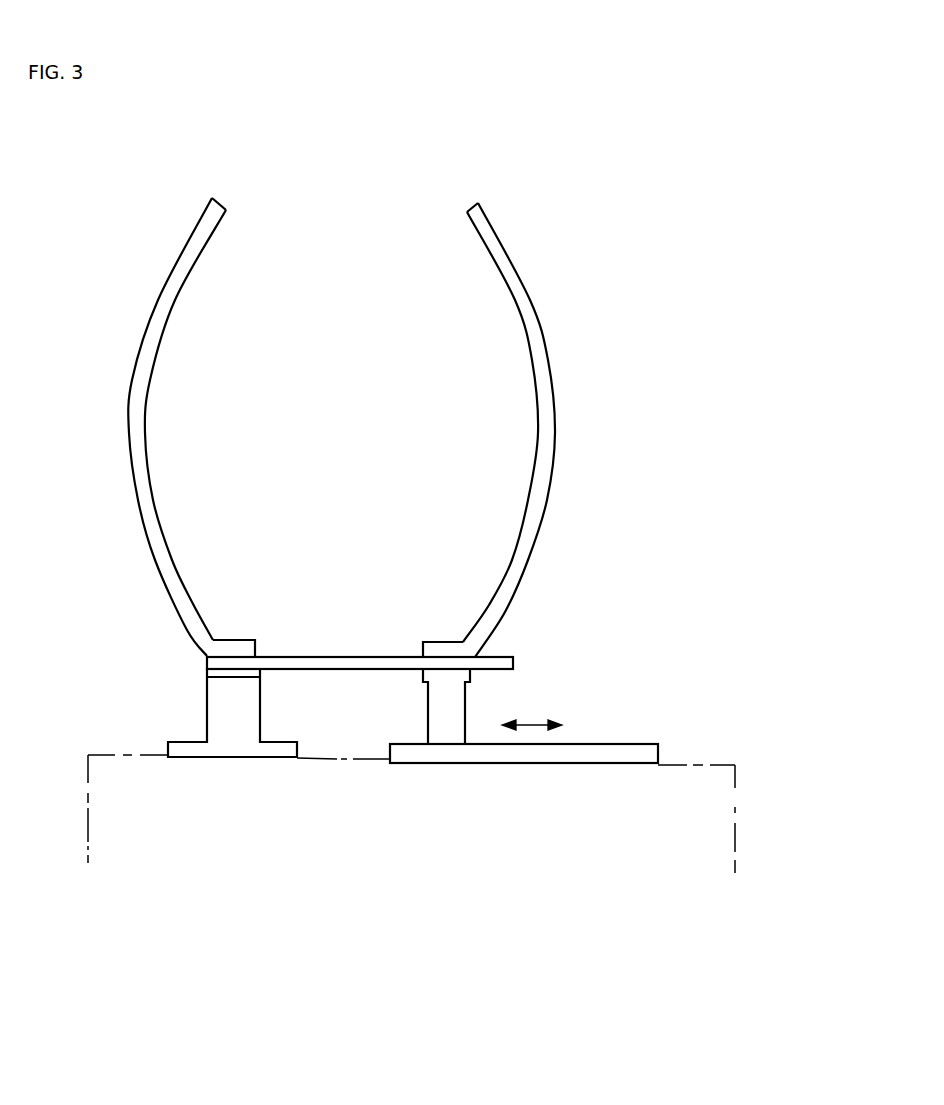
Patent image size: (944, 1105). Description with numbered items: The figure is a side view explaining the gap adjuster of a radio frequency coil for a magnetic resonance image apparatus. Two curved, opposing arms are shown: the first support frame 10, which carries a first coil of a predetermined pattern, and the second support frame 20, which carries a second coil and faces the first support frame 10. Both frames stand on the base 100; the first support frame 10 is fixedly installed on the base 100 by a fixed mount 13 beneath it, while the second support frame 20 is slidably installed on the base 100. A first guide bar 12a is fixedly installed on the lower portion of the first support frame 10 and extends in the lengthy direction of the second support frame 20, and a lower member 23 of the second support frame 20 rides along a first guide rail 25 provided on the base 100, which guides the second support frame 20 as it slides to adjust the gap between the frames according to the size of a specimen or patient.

The first support frame 10 is at (205, 222).
The second support frame 20 is at (482, 218).
The first guide bar 12a is at (503, 660).
The fixed pedestal 13 is at (220, 669).
The slider 23 is at (452, 677).
The first guide rail 25 is at (623, 755).
The base 100 is at (715, 767).